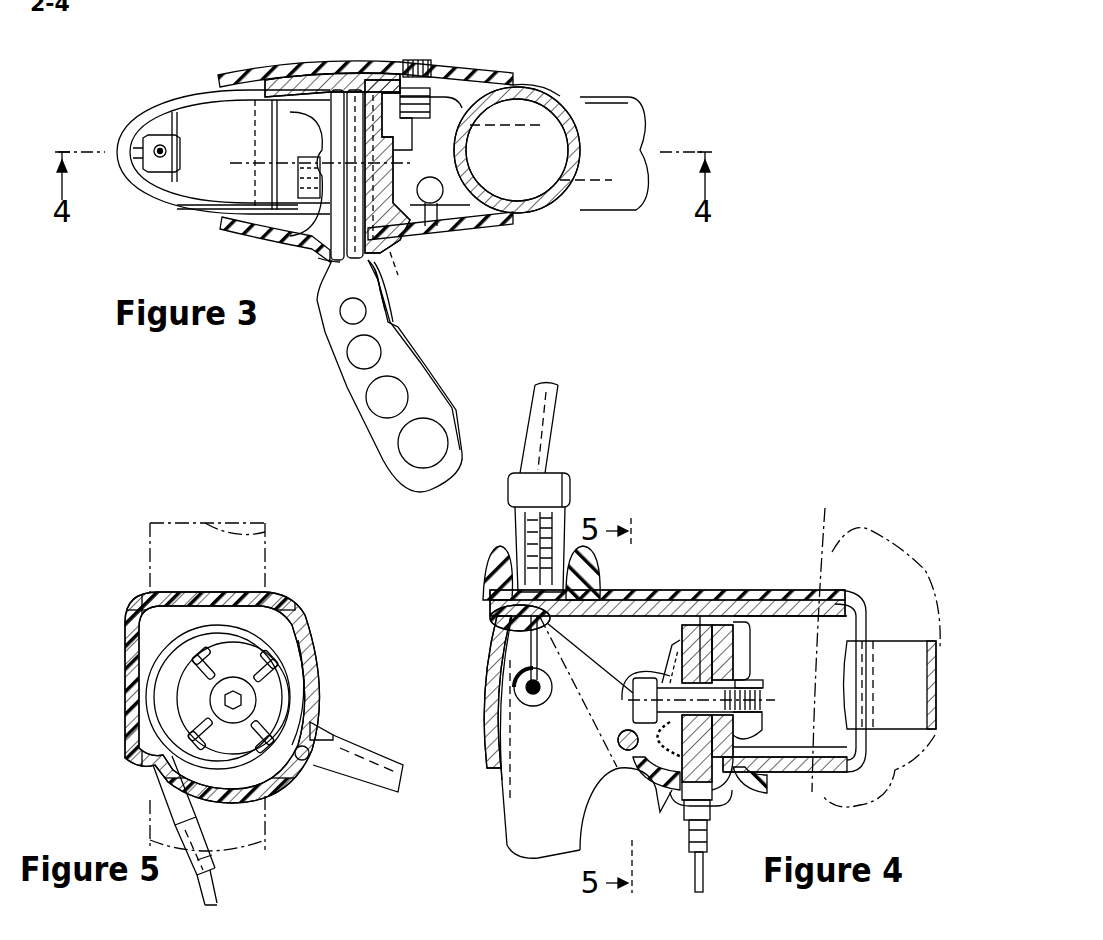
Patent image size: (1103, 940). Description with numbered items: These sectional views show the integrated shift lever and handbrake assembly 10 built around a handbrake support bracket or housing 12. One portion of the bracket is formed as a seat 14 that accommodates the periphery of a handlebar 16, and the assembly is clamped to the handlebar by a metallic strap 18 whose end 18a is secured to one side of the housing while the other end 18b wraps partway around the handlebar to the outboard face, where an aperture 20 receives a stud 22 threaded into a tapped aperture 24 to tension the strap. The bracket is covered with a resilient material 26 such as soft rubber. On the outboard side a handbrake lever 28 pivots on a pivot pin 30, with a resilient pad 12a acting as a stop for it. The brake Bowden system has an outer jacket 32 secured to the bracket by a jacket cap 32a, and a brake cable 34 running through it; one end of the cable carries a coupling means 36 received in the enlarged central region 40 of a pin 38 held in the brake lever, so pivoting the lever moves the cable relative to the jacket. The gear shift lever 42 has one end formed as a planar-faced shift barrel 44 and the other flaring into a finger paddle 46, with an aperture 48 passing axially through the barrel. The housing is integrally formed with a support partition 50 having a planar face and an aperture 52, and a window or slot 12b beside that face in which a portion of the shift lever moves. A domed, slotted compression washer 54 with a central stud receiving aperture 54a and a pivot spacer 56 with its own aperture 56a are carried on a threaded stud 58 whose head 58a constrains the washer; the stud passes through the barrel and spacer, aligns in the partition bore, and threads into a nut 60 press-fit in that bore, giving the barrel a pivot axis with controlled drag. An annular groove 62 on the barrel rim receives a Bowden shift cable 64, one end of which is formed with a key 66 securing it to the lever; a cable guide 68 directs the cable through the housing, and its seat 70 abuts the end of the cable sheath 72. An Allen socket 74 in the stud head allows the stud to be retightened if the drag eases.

In FIG. 3, the integrated shift lever and handbrake assembly 10 is at (300, 298).
In FIG. 4, the integrated shift lever and handbrake assembly 10 is at (735, 580).
In FIG. 5, the integrated shift lever and handbrake assembly 10 is at (345, 698).
In FIG. 3, the handbrake support bracket 12 is at (366, 86).
In FIG. 4, the handbrake support bracket 12 is at (672, 600).
In FIG. 5, the handbrake support bracket 12 is at (126, 655).
In FIG. 4, the resilient pad 12a is at (492, 620).
In FIG. 3, the window or slot 12b is at (302, 262).
In FIG. 5, the window or slot 12b is at (294, 792).
In FIG. 3, the seat 14 is at (475, 96).
In FIG. 4, the seat 14 is at (800, 588).
In FIG. 3, the handlebar 16 is at (598, 102).
In FIG. 4, the handlebar 16 is at (875, 643).
In FIG. 5, the handlebar 16 is at (150, 560).
In FIG. 3, the metallic strap 18 is at (535, 92).
In FIG. 4, the metallic strap 18 is at (888, 647).
In FIG. 3, the strap end 18a is at (420, 232).
In FIG. 3, the strap end 18b is at (450, 92).
In FIG. 3, the aperture 20 is at (374, 76).
In FIG. 3, the stud 22 is at (416, 59).
In FIG. 3, the tapped aperture 24 is at (412, 122).
In FIG. 3, the resilient material 26 is at (252, 72).
In FIG. 4, the resilient material 26 is at (655, 598).
In FIG. 5, the resilient material 26 is at (137, 606).
In FIG. 3, the handbrake lever 28 is at (192, 95).
In FIG. 4, the handbrake lever 28 is at (490, 820).
In FIG. 3, the pivot pin 30 is at (265, 128).
In FIG. 4, the pivot pin 30 is at (625, 752).
In FIG. 4, the outer sheath or jacket 32 is at (552, 430).
In FIG. 4, the jacket cap 32a is at (560, 498).
In FIG. 3, the brake cable 34 is at (181, 139).
In FIG. 4, the brake cable 34 is at (530, 640).
In FIG. 3, the coupling means 36 is at (170, 153).
In FIG. 4, the coupling means 36 is at (500, 712).
In FIG. 3, the pin 38 is at (172, 198).
In FIG. 4, the pin 38 is at (514, 688).
In FIG. 3, the enlarged central region 40 is at (146, 153).
In FIG. 4, the enlarged central region 40 is at (552, 704).
In FIG. 3, the gear shift lever 42 is at (322, 276).
In FIG. 5, the gear shift lever 42 is at (333, 726).
In FIG. 3, the shift barrel 44 is at (300, 84).
In FIG. 4, the shift barrel 44 is at (712, 610).
In FIG. 5, the shift barrel 44 is at (160, 692).
In FIG. 3, the finger paddle 46 is at (370, 428).
In FIG. 5, the finger paddle 46 is at (375, 786).
In FIG. 3, the aperture 48 is at (312, 162).
In FIG. 4, the aperture 48 is at (670, 643).
In FIG. 3, the support partition 50 is at (396, 116).
In FIG. 4, the support partition 50 is at (725, 660).
In FIG. 5, the support partition 50 is at (148, 645).
In FIG. 3, the aperture 52 is at (402, 275).
In FIG. 4, the aperture 52 is at (760, 684).
In FIG. 3, the compression washer 54 is at (262, 118).
In FIG. 4, the compression washer 54 is at (672, 690).
In FIG. 5, the compression washer 54 is at (262, 655).
In FIG. 4, the stud receiving aperture 54a is at (633, 694).
In FIG. 3, the pivot washer or spacer 56 is at (388, 300).
In FIG. 4, the pivot washer or spacer 56 is at (738, 776).
In FIG. 4, the stud receiving aperture 56a is at (750, 728).
In FIG. 3, the threaded stud 58 is at (415, 232).
In FIG. 4, the threaded stud 58 is at (762, 700).
In FIG. 3, the head 58a is at (285, 182).
In FIG. 4, the head 58a is at (640, 712).
In FIG. 5, the head 58a is at (210, 698).
In FIG. 3, the nut 60 is at (347, 98).
In FIG. 4, the nut 60 is at (775, 660).
In FIG. 3, the annular groove 62 is at (322, 300).
In FIG. 4, the annular groove 62 is at (600, 604).
In FIG. 5, the annular groove 62 is at (302, 662).
In FIG. 3, the Bowden shift cable 64 is at (352, 88).
In FIG. 4, the Bowden shift cable 64 is at (695, 870).
In FIG. 5, the Bowden shift cable 64 is at (305, 682).
In FIG. 5, the enlargement or key 66 is at (305, 760).
In FIG. 4, the cable guide or portal 68 is at (712, 808).
In FIG. 5, the cable guide or portal 68 is at (163, 796).
In FIG. 4, the seat 70 is at (708, 832).
In FIG. 5, the seat 70 is at (185, 828).
In FIG. 4, the Bowden cable sheath 72 is at (689, 840).
In FIG. 5, the Bowden cable sheath 72 is at (212, 862).
In FIG. 5, the Allen socket 74 is at (226, 705).